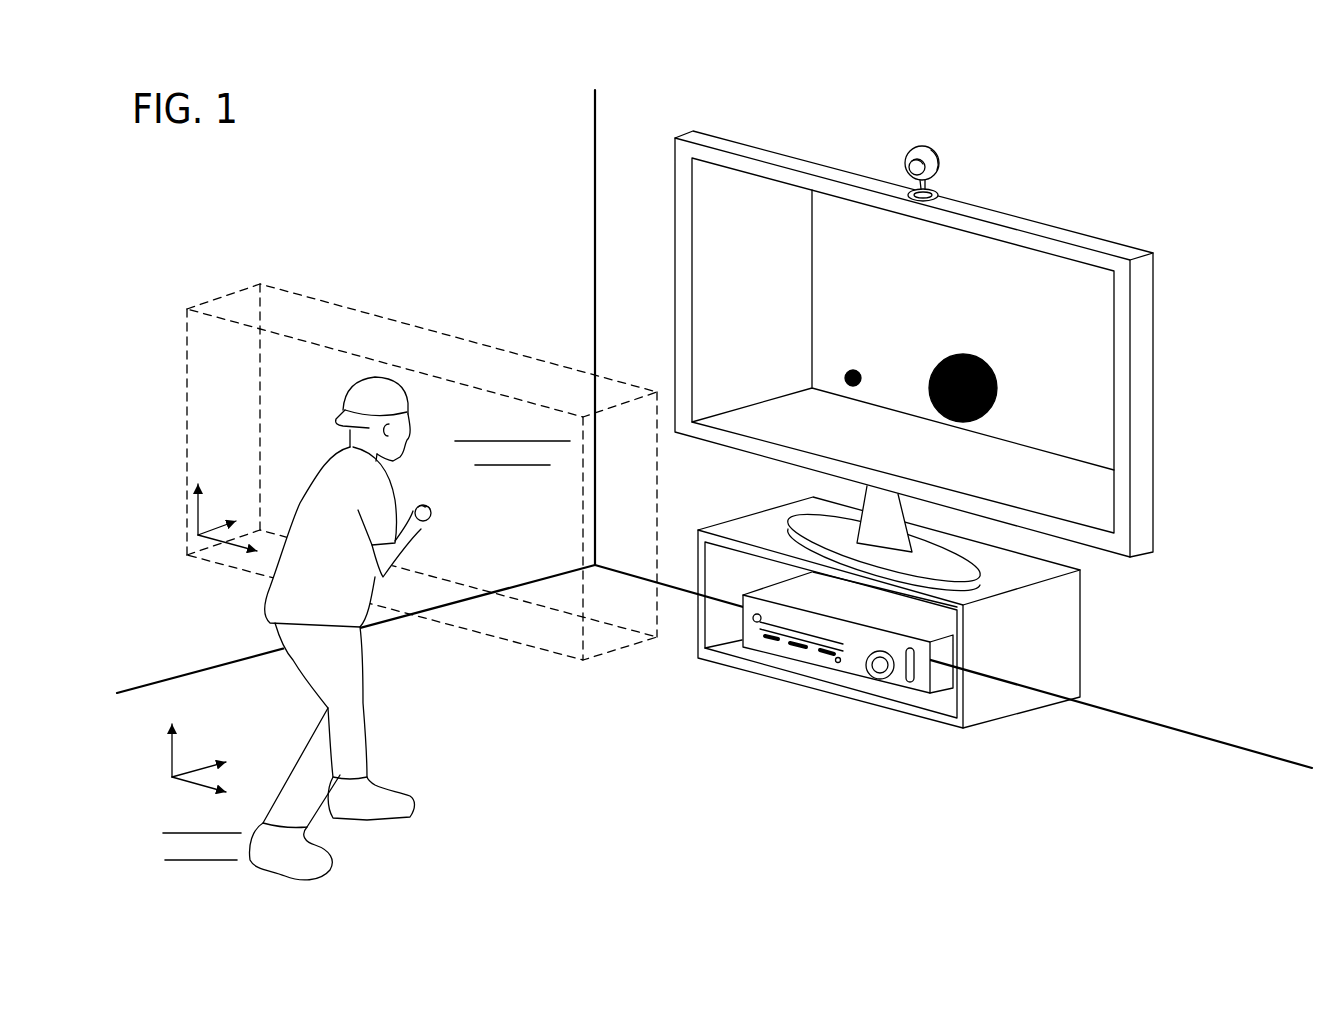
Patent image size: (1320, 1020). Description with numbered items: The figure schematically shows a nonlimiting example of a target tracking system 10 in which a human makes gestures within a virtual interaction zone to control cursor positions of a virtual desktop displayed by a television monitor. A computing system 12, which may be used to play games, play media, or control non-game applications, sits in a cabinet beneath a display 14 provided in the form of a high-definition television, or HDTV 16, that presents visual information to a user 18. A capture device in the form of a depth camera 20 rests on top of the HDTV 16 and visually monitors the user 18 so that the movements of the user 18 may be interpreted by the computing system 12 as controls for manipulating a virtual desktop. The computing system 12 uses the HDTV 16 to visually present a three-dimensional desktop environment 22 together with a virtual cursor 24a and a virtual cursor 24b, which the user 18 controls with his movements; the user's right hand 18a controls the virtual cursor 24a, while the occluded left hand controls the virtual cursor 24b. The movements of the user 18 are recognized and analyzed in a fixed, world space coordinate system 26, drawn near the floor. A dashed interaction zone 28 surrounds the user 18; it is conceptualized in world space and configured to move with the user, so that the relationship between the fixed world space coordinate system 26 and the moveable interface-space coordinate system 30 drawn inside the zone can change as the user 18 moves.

The target tracking system 10 is at (934, 410).
The computing system 12 is at (853, 673).
The display 14 is at (940, 345).
The HDTV 16 is at (1153, 342).
The user 18 is at (366, 628).
The user's right hand 18a is at (419, 519).
The depth camera 20 is at (939, 165).
The three-dimensional desktop environment 22 is at (491, 514).
The virtual cursor 24a is at (980, 356).
The virtual cursor 24b is at (859, 366).
The world space coordinate system 26 is at (211, 736).
The interaction zone 28 is at (318, 296).
The interface-space coordinate system 30 is at (215, 496).